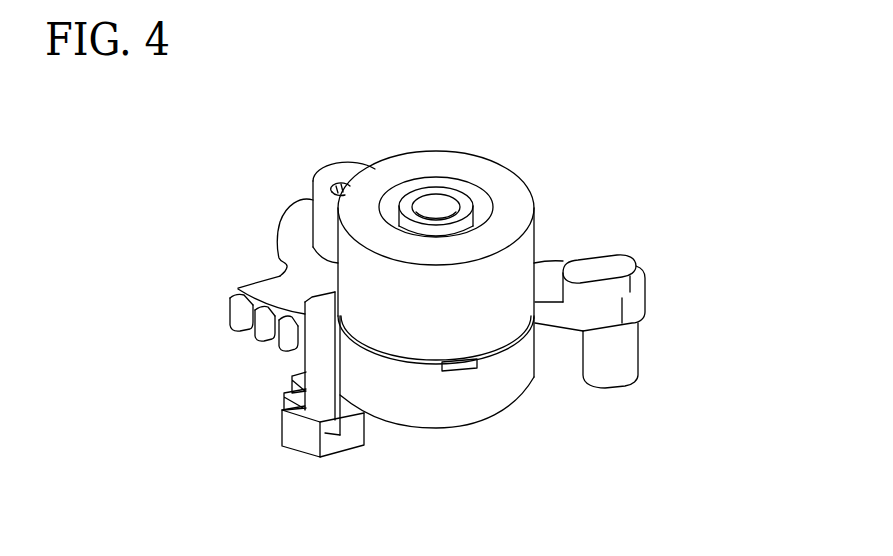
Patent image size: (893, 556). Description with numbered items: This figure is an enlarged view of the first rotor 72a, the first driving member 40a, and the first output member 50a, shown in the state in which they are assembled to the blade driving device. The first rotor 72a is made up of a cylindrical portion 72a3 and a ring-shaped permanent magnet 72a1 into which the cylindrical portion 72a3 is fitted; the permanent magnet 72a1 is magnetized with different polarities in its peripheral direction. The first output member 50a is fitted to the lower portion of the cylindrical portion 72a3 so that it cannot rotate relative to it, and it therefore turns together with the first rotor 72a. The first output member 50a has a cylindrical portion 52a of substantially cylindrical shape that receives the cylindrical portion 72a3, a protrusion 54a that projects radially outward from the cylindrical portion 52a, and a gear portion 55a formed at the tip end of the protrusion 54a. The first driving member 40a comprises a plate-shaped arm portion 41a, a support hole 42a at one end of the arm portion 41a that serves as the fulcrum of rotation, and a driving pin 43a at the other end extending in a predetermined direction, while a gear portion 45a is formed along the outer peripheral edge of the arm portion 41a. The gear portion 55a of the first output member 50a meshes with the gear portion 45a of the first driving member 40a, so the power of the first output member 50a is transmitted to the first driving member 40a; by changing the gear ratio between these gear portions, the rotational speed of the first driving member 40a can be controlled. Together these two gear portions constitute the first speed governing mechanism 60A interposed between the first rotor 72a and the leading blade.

The first driving member 40a is at (250, 248).
The arm portion 41a is at (298, 220).
The support hole 42a is at (338, 192).
The driving pin 43a is at (632, 347).
The gear portion 45a is at (232, 313).
The first output member 50a is at (268, 395).
The cylindrical portion 52a is at (470, 408).
The protrusion 54a is at (325, 424).
The gear portion 55a is at (285, 418).
The first speed governing mechanism 60A is at (200, 355).
The first rotor 72a is at (640, 144).
The permanent magnet 72a1 is at (522, 255).
The cylindrical portion 72a3 is at (463, 193).